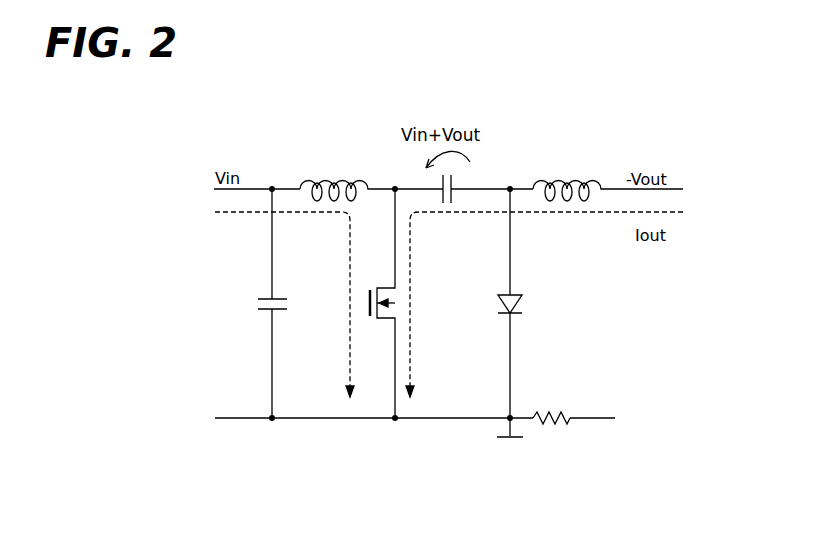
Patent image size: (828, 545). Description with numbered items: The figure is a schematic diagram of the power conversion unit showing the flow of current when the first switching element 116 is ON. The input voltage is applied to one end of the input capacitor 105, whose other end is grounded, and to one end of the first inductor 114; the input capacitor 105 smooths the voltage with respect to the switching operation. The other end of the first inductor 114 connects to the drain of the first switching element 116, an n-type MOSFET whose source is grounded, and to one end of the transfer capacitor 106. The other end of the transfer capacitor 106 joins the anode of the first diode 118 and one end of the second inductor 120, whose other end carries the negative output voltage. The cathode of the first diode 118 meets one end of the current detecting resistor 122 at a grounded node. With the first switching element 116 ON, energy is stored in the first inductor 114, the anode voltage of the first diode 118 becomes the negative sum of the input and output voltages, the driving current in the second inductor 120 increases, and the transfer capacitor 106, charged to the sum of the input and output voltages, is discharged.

The input capacitor 105 is at (256, 300).
The transfer capacitor 106 is at (462, 185).
The first inductor 114 is at (335, 176).
The first switching element 116 is at (377, 322).
The first diode 118 is at (525, 302).
The second inductor 120 is at (579, 180).
The current detecting resistor 122 is at (549, 439).